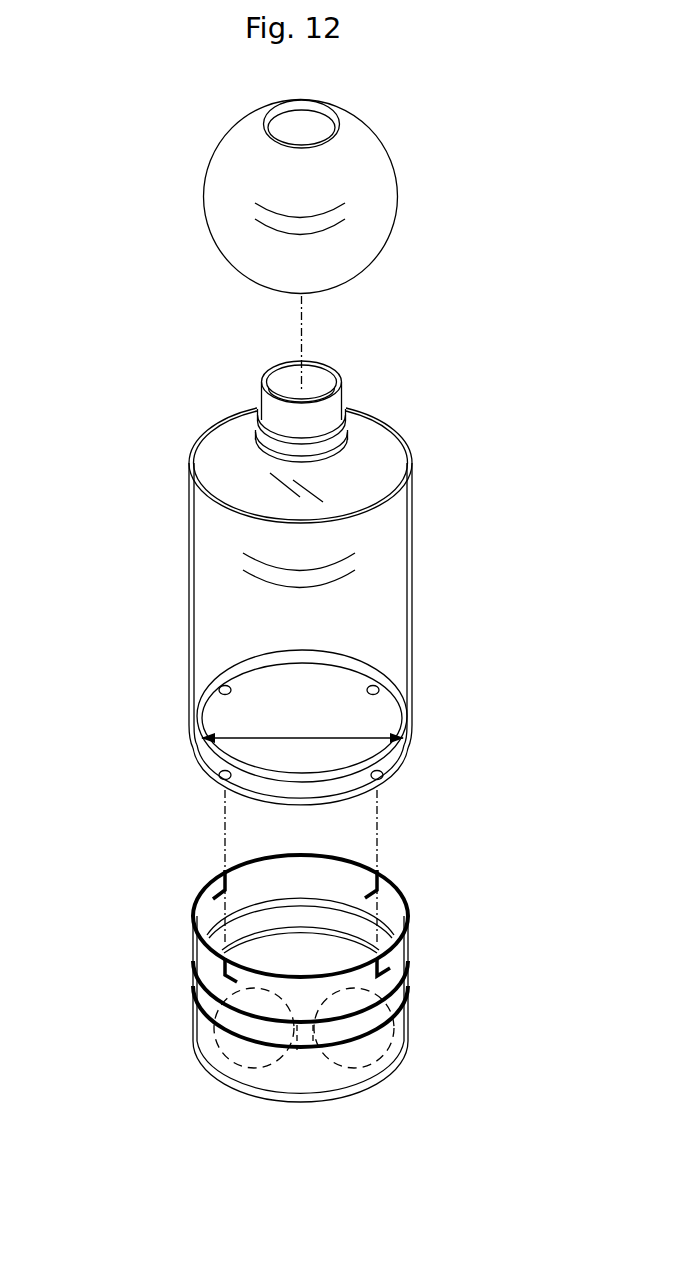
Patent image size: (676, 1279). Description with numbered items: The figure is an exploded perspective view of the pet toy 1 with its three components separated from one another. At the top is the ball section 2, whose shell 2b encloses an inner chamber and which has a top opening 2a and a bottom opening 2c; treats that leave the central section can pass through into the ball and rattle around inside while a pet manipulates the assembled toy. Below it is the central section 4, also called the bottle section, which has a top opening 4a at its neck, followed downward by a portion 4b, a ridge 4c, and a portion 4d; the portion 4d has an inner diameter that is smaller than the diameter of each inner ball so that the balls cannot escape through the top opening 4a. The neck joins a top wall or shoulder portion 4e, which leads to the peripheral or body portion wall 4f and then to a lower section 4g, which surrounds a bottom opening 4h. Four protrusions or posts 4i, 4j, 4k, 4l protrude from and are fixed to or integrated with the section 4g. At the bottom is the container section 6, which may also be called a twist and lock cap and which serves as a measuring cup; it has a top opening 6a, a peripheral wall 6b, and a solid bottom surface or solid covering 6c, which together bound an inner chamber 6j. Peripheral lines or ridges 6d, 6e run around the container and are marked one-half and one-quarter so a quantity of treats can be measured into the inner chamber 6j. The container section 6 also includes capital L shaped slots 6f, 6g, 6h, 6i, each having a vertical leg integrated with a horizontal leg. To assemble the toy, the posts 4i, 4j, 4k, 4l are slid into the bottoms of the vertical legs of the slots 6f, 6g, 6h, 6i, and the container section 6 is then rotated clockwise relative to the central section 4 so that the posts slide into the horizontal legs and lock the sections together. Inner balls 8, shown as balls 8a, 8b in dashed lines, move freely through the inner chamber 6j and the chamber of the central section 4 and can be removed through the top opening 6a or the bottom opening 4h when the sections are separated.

The pet toy 1 is at (433, 168).
The ball section 2 is at (192, 208).
The top opening 2a is at (316, 141).
The shell 2b is at (250, 180).
The bottom opening 2c is at (310, 298).
The central section 4 is at (183, 580).
The top opening 4a is at (285, 382).
The portion 4b is at (262, 410).
The ridge 4c is at (275, 427).
The portion 4d is at (270, 448).
The top wall or shoulder portion 4e is at (372, 468).
The peripheral or body portion wall 4f is at (397, 575).
The section 4g is at (390, 750).
The bottom opening 4h is at (317, 717).
The protrusion or post 4i is at (231, 690).
The protrusion or post 4j is at (371, 686).
The protrusion or post 4k is at (220, 778).
The protrusion or post 4l is at (383, 771).
The container section 6 is at (180, 1012).
The top opening 6a is at (308, 883).
The peripheral wall 6b is at (277, 1083).
The solid bottom surface or solid covering 6c is at (297, 1030).
The peripheral line or ridge 6d is at (303, 1027).
The peripheral line or ridge 6e is at (305, 1030).
The capital L shaped slot 6f is at (223, 872).
The capital L shaped slot 6g is at (377, 872).
The capital L shaped slot 6h is at (228, 963).
The capital L shaped slot 6i is at (373, 957).
The inner chamber 6j is at (308, 947).
The inner balls 8 is at (227, 1042).
The ball 8a is at (248, 1059).
The ball 8b is at (378, 1045).